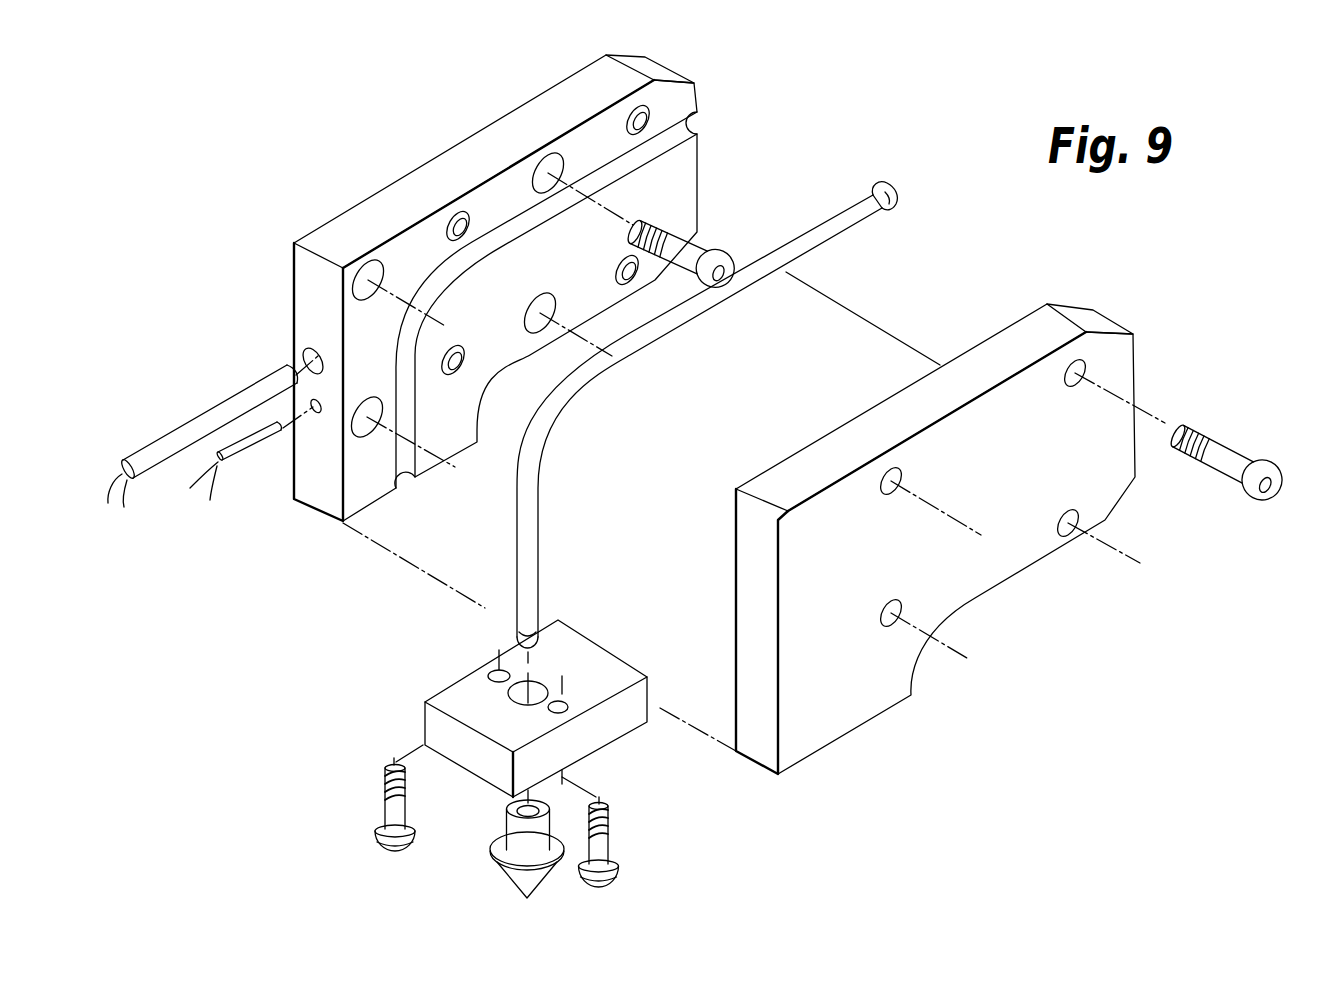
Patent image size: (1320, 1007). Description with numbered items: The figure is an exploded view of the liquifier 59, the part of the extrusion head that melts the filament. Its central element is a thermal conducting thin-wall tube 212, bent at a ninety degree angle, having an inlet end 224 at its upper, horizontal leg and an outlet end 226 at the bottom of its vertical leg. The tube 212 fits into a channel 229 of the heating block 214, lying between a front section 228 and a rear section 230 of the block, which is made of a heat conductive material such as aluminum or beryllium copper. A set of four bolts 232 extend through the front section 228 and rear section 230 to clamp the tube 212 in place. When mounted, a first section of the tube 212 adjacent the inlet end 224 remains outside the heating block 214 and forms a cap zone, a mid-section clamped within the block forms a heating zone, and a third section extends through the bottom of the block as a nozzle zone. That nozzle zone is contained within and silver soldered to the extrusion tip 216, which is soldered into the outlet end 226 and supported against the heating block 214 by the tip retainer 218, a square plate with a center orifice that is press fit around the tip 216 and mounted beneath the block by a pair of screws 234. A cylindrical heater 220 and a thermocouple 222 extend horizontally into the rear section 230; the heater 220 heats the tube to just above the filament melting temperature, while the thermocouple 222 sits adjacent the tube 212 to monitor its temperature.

The liquifier 59 is at (837, 136).
The thermal conducting thin-wall tube 212 is at (855, 217).
The heating block 214 is at (549, 118).
The extrusion tip 216 is at (520, 885).
The tip retainer 218 is at (602, 718).
The heater 220 is at (245, 402).
The thermocouple 222 is at (245, 445).
The inlet end 224 is at (897, 193).
The outlet end 226 is at (517, 643).
The front section 228 is at (1000, 348).
The channel 229 is at (667, 135).
The rear section 230 is at (402, 200).
The bolts 232 is at (1212, 452).
The screws 234 is at (600, 847).